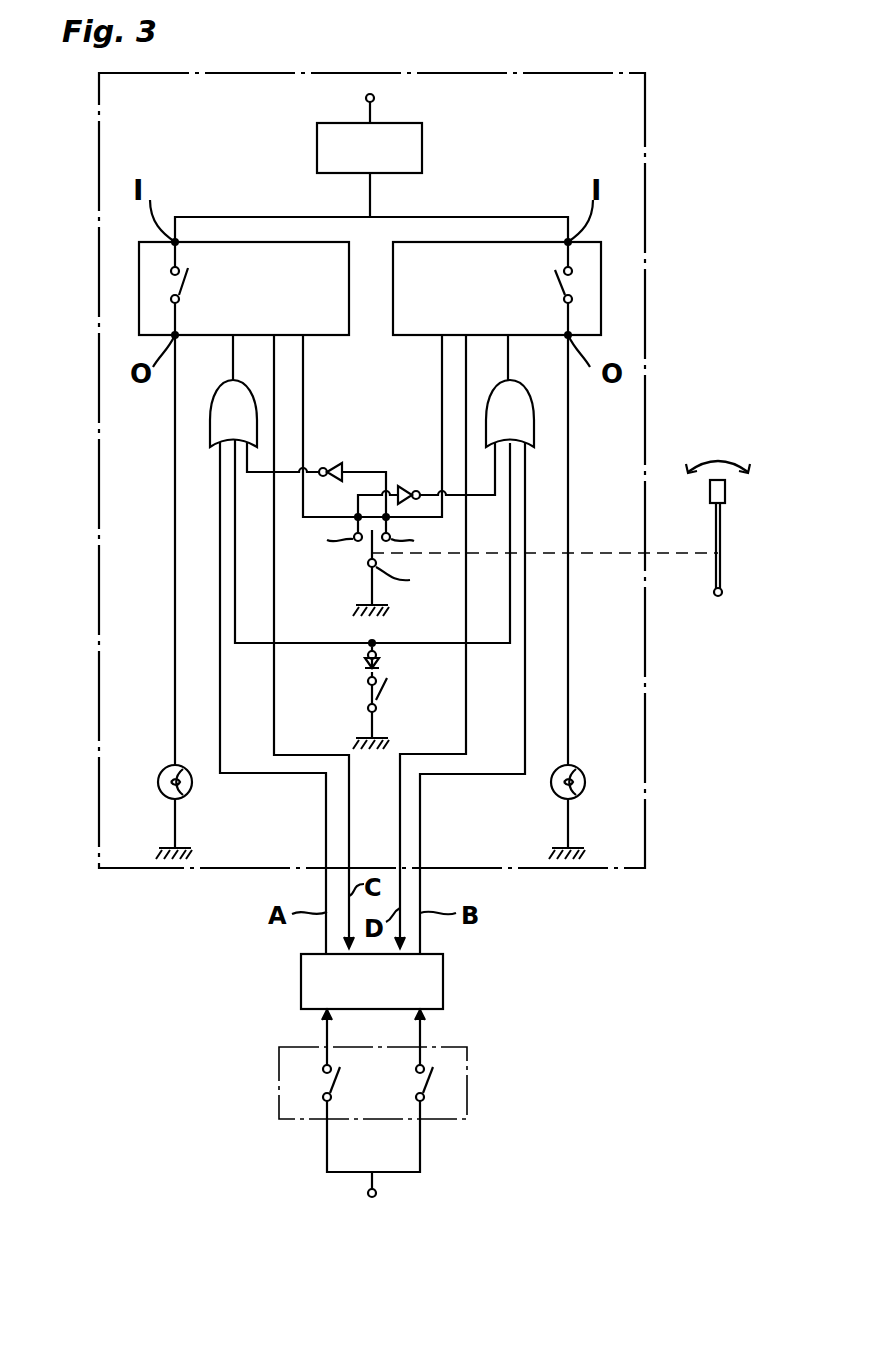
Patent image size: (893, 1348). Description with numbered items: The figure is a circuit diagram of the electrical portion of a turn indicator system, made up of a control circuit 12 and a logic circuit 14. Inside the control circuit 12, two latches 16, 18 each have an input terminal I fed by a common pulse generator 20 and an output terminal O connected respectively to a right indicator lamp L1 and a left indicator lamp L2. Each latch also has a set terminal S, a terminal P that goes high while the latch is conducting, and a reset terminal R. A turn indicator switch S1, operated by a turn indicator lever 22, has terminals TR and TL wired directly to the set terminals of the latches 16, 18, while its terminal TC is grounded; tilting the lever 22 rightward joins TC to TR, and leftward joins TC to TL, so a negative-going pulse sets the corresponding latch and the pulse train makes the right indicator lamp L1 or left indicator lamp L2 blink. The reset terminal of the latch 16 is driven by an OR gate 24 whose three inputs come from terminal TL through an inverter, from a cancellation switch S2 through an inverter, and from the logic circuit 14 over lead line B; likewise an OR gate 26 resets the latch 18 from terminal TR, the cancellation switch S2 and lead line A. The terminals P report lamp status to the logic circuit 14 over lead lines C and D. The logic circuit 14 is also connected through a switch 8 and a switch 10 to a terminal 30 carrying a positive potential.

The control circuit 12 is at (645, 166).
The pulse generator 20 is at (422, 142).
The latch 18 is at (244, 288).
The latch 16 is at (497, 288).
The OR gate 26 is at (233, 391).
The OR gate 24 is at (510, 391).
The turn indicator lever 22 is at (722, 527).
The logic circuit 14 is at (443, 975).
The switch 10 is at (322, 1080).
The switch 8 is at (427, 1081).
The terminal 30 is at (368, 1193).
The turn indicator switch S1 is at (360, 558).
The cancellation switch S2 is at (392, 690).
The right indicator lamp L1 is at (580, 770).
The left indicator lamp L2 is at (165, 770).